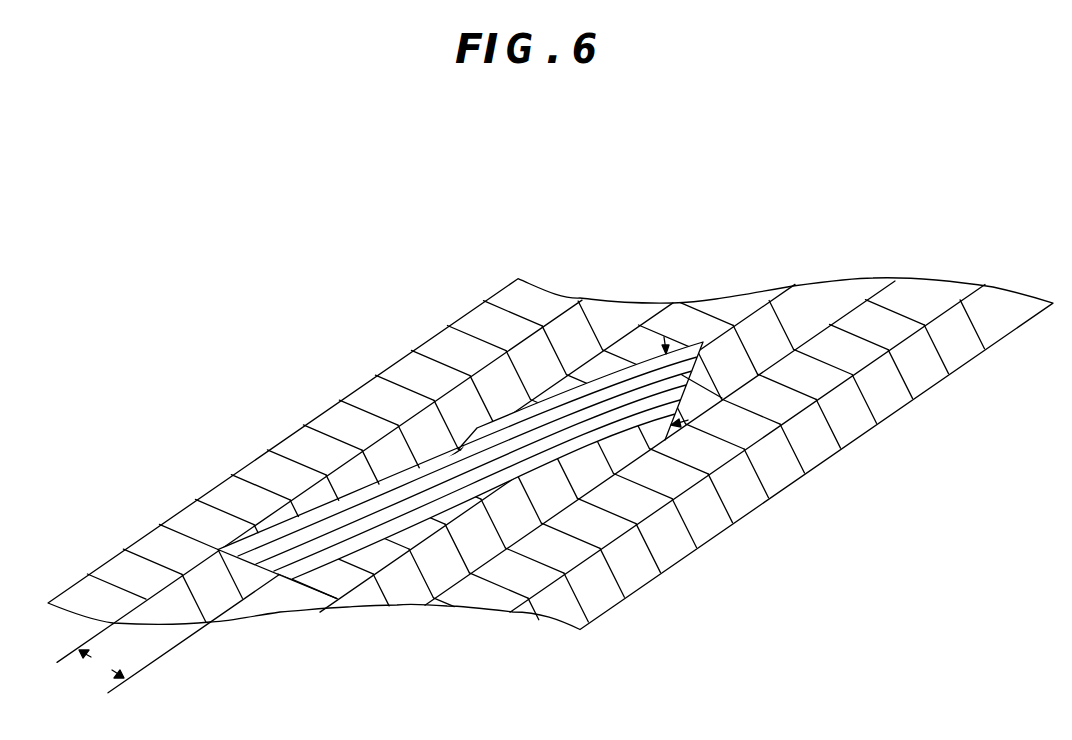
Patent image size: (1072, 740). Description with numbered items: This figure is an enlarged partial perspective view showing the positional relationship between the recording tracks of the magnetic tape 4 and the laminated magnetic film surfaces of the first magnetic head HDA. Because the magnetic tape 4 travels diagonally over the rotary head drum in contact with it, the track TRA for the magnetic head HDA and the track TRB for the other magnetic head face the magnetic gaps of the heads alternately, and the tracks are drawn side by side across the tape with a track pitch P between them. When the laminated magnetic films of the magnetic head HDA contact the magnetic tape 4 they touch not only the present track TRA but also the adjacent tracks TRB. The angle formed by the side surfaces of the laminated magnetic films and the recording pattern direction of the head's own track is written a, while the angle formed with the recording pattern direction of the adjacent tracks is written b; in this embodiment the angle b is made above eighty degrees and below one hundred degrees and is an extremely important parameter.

The magnetic tape 4 is at (827, 459).
The magnetic head HDA is at (545, 398).
The track TRA is at (666, 318).
The track TRB is at (223, 598).
The angle a is at (667, 337).
The angle b is at (690, 418).
The track pitch P is at (133, 657).